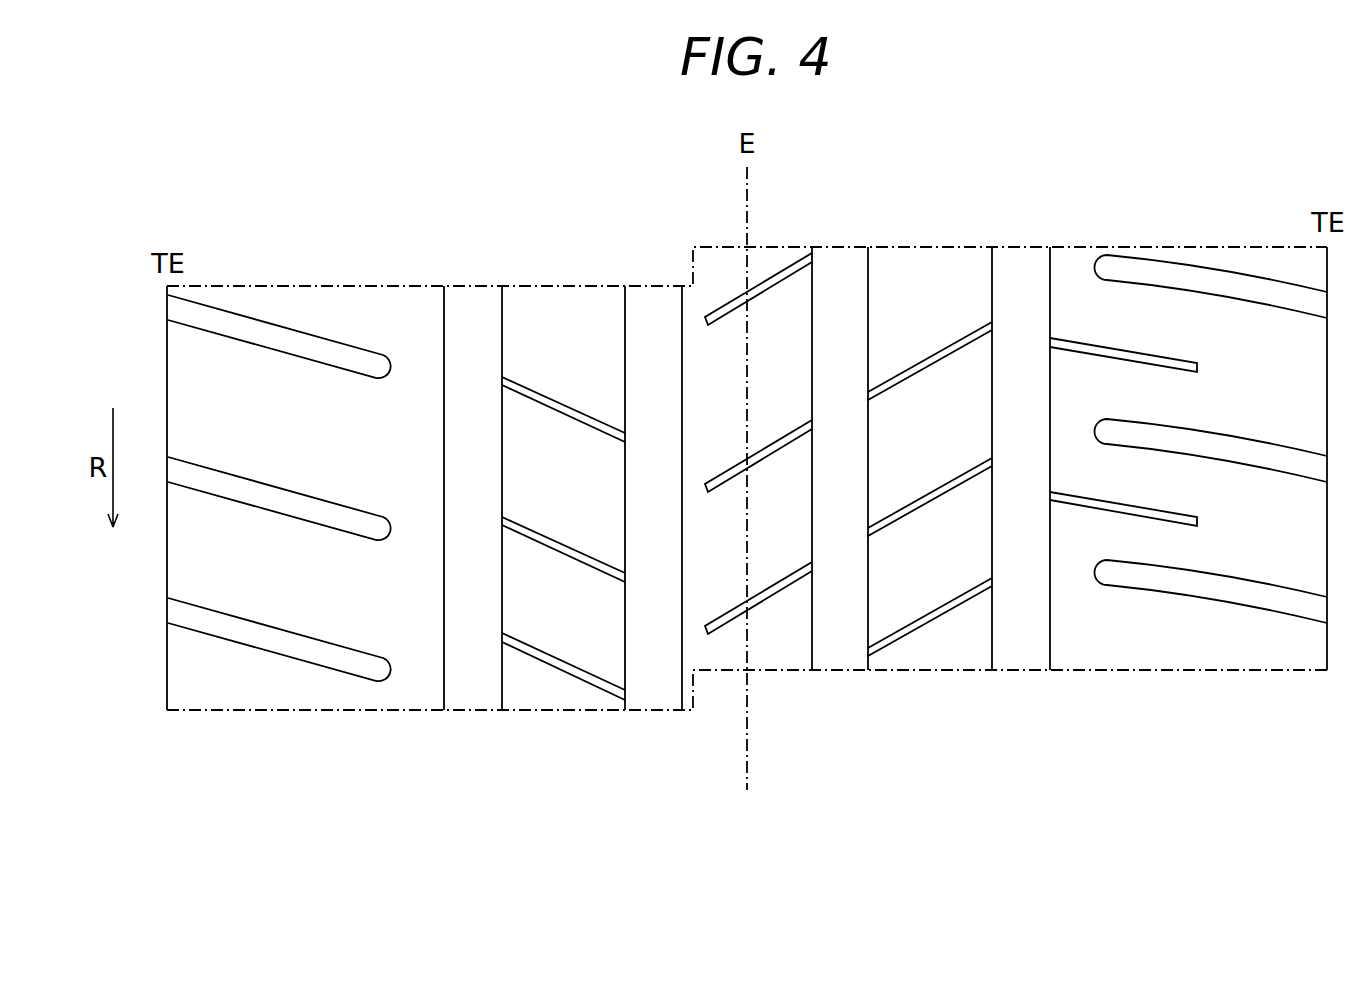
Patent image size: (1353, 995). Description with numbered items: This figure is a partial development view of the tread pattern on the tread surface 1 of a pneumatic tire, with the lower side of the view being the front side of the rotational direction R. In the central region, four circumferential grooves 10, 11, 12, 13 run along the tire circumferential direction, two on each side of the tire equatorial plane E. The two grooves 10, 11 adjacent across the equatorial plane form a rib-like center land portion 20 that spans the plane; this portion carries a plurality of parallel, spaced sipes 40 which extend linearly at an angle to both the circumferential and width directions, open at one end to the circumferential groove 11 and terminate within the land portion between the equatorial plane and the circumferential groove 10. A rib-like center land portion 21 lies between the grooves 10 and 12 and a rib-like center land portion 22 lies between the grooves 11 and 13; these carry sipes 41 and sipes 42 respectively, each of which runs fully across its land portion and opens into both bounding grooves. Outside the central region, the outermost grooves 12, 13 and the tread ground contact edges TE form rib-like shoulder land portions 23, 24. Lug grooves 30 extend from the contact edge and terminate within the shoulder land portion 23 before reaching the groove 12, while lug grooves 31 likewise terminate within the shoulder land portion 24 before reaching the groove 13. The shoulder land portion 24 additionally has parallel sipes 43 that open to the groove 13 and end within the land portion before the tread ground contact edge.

The tread surface 1 is at (1091, 145).
The circumferential groove 10 is at (647, 305).
The circumferential groove 11 is at (838, 258).
The circumferential groove 12 is at (470, 305).
The circumferential groove 13 is at (1020, 258).
The rib-like center land portion 20 is at (773, 255).
The rib-like center land portion 21 is at (552, 305).
The rib-like center land portion 22 is at (926, 258).
The rib-like shoulder land portion 23 is at (363, 310).
The rib-like shoulder land portion 24 is at (1238, 260).
The lug groove 30 is at (268, 310).
The lug groove 31 is at (1165, 278).
The sipe 40 is at (768, 595).
The sipe 41 is at (563, 665).
The sipe 42 is at (925, 622).
The sipe 43 is at (1095, 502).